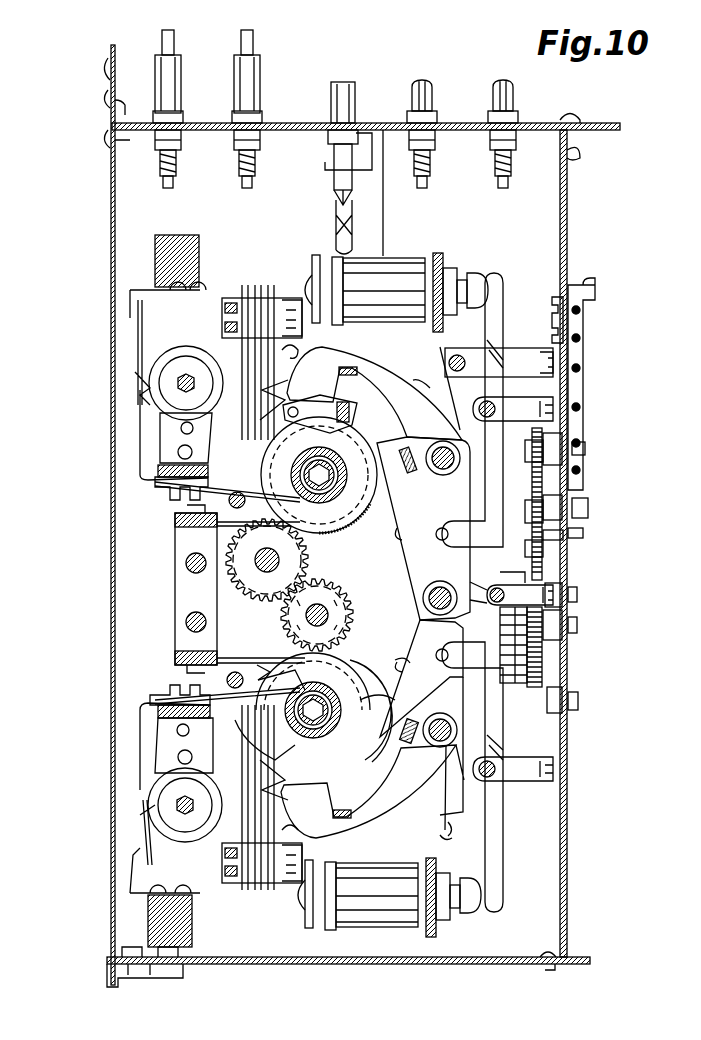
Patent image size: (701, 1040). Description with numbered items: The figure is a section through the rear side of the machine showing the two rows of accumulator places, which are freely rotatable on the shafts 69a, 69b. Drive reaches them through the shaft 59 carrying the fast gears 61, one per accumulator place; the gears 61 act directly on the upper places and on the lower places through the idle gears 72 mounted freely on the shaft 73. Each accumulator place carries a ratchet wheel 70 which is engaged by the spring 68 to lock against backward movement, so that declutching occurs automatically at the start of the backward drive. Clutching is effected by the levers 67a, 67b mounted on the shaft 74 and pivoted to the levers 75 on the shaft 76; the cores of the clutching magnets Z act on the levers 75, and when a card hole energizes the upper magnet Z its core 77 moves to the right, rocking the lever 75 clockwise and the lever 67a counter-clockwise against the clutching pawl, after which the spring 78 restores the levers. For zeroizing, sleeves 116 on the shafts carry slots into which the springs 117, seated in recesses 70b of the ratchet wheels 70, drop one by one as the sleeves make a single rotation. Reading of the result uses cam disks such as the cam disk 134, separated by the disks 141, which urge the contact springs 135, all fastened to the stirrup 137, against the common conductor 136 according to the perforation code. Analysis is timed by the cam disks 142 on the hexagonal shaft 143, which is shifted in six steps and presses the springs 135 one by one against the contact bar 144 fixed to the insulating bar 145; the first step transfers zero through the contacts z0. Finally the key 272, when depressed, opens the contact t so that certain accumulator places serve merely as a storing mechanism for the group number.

The key 272 is at (343, 82).
The core 77 is at (322, 248).
The contact t is at (351, 232).
The clutching magnet Z is at (398, 290).
The lever 75 is at (498, 296).
The shaft 76 is at (496, 409).
The shaft 74 is at (458, 596).
The spring 78 is at (578, 568).
The sleeve 116 is at (323, 457).
The cam disk 134 is at (338, 502).
The disk 141 is at (290, 458).
The shaft 69a is at (342, 480).
The lever 67a is at (409, 555).
The lever 67b is at (414, 620).
The shaft 59 is at (279, 560).
The gear 61 is at (292, 572).
The idle gear 72 is at (338, 618).
The shaft 73 is at (328, 622).
The ratchet wheel 70 is at (280, 690).
The recess 70b is at (295, 687).
The shaft 69b is at (336, 727).
The spring 117 is at (363, 688).
The insulating bar 145 is at (178, 237).
The contact bar 144 is at (133, 306).
The shaft 143 is at (160, 379).
The cam disk 142 is at (177, 386).
The contact spring 135 is at (140, 455).
The stirrup 137 is at (225, 487).
The common conductor 136 is at (230, 501).
The spring 68 is at (175, 660).
The contacts z0 is at (233, 403).